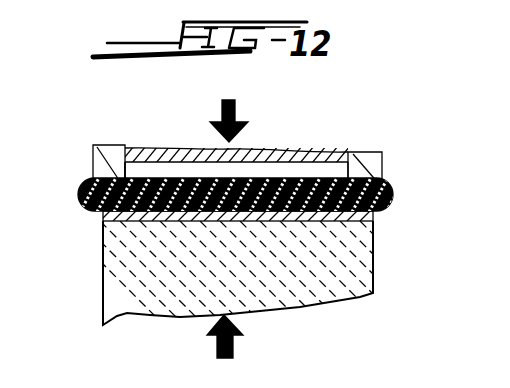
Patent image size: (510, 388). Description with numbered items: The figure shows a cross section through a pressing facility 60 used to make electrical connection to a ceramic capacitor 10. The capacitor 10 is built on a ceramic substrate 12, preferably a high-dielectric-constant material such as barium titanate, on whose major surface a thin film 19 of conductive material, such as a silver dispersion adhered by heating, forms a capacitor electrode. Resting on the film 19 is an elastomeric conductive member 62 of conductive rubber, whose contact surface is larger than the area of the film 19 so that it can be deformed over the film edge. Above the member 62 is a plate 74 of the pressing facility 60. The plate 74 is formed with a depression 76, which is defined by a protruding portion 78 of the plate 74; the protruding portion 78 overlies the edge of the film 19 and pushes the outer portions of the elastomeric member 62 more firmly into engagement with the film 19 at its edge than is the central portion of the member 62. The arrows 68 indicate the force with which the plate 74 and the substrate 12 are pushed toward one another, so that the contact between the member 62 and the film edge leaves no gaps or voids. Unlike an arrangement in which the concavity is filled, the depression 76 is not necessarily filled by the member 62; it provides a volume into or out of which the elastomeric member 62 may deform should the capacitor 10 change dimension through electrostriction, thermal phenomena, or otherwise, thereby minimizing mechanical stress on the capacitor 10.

The ceramic capacitor 10 is at (99, 292).
The ceramic substrate 12 is at (312, 290).
The thin film 19 is at (372, 214).
The pressing facility 60 is at (298, 131).
The elastomeric conductive member 62 is at (390, 200).
The arrows 68 is at (236, 110).
The plate 74 is at (305, 156).
The depression 76 is at (143, 173).
The protruding portion 78 is at (95, 168).